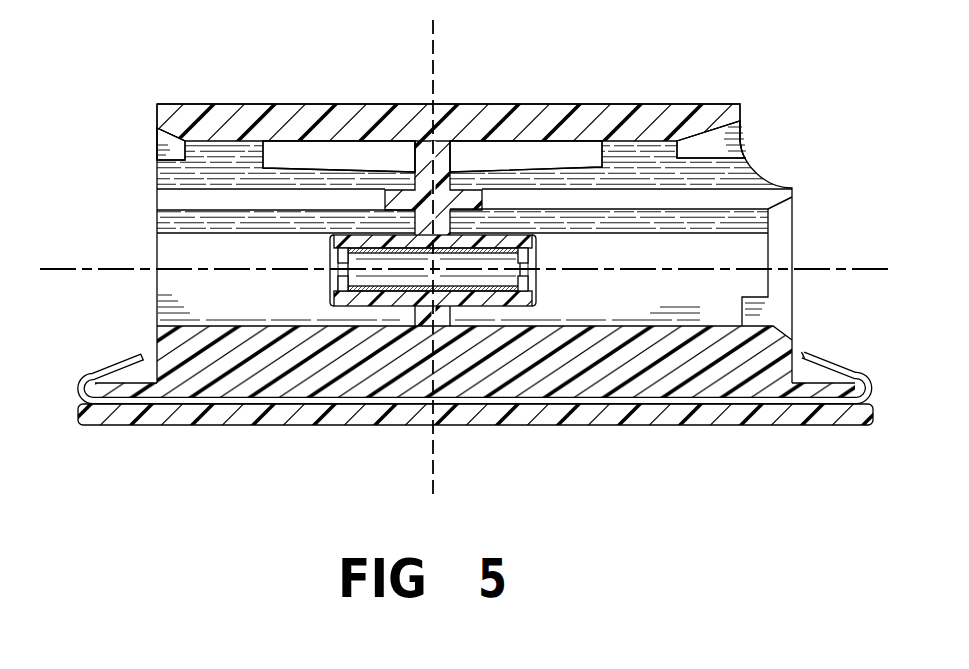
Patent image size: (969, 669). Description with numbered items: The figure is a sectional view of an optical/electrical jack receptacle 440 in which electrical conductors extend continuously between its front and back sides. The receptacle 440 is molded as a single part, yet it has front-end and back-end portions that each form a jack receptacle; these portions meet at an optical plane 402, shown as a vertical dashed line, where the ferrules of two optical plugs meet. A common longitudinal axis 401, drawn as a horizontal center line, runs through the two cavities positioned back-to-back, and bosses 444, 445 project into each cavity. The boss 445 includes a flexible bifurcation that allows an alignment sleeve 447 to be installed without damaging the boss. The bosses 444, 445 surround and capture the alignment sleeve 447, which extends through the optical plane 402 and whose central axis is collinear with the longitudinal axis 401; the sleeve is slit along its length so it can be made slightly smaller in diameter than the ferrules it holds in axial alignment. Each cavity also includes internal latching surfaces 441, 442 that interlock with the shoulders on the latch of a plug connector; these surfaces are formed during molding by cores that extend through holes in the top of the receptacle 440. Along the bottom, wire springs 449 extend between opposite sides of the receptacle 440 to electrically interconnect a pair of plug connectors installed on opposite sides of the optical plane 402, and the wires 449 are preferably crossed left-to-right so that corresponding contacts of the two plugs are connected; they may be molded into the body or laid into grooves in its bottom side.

The jack receptacle 440 is at (151, 62).
The internal latching surface 441 is at (187, 152).
The internal latching surface 442 is at (675, 143).
The boss 444 is at (528, 241).
The boss 445 is at (338, 243).
The alignment sleeve 447 is at (533, 277).
The wire springs 449 is at (122, 367).
The longitudinal axis 401 is at (83, 269).
The optical plane 402 is at (434, 80).